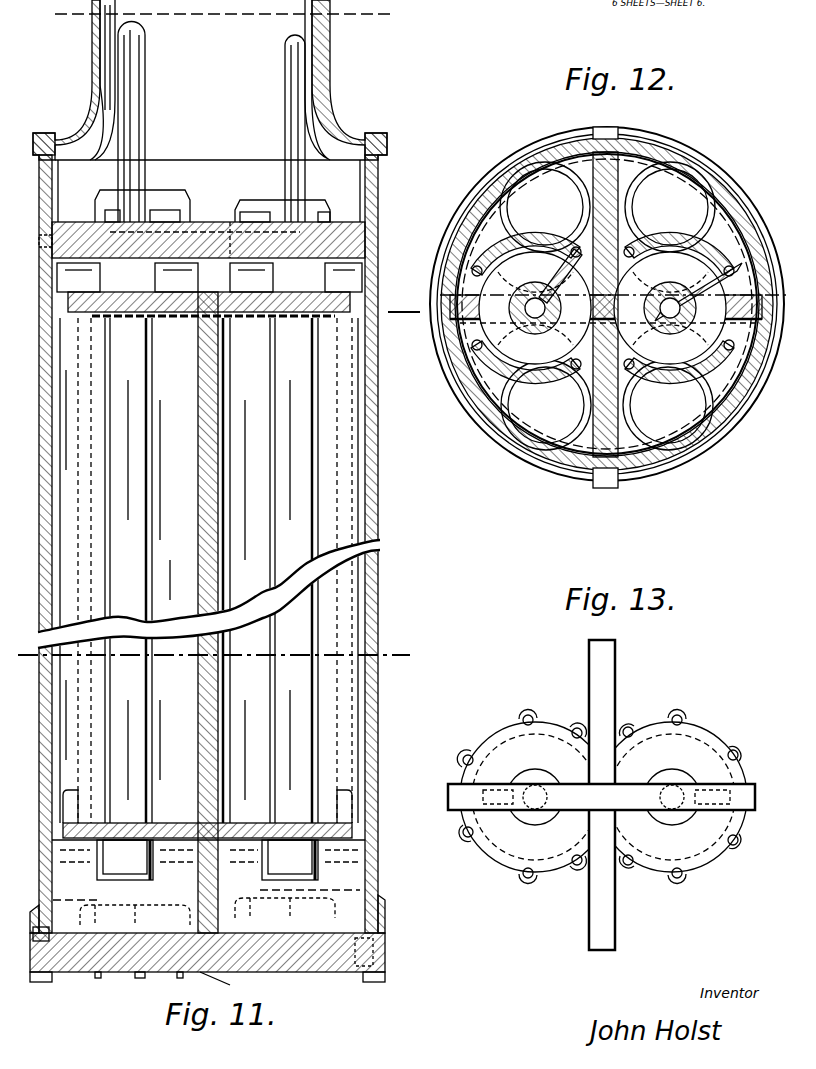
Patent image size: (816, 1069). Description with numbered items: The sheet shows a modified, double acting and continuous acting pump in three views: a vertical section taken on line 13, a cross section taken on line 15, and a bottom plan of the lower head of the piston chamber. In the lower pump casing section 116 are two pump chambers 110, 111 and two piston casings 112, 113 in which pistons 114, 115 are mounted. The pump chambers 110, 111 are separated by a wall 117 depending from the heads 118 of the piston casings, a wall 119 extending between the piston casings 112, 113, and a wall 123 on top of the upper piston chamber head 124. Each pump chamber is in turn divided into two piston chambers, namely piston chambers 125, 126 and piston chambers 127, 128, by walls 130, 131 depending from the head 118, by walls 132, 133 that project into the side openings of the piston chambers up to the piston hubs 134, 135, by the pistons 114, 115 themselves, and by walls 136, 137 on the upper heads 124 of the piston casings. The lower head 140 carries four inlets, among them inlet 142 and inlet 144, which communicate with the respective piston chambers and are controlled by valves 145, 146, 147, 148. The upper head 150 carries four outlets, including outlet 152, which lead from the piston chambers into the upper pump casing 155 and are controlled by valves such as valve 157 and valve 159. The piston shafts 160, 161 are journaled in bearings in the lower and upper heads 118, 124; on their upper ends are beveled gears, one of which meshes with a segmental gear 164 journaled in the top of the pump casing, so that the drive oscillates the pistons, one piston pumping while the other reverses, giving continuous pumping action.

In FIG. 11, the section line 13 is at (404, 320).
In FIG. 12, the section line 13 is at (450, 312).
In FIG. 11, the section line 15 is at (226, 655).
In FIG. 12, the pump chamber 110 is at (757, 212).
In FIG. 11, the pump chamber 111 is at (208, 533).
In FIG. 12, the pump chamber 111 is at (465, 370).
In FIG. 12, the piston casing 112 is at (730, 170).
In FIG. 12, the piston casing 113 is at (470, 415).
In FIG. 12, the piston 114 is at (670, 291).
In FIG. 11, the piston 115 is at (193, 570).
In FIG. 12, the piston 115 is at (543, 290).
In FIG. 11, the lower pump casing section 116 is at (389, 576).
In FIG. 12, the lower pump casing section 116 is at (714, 473).
In FIG. 11, the wall 117 is at (195, 882).
In FIG. 13, the wall 117 is at (605, 905).
In FIG. 11, the head 118 is at (85, 820).
In FIG. 13, the head 118 is at (705, 740).
In FIG. 11, the wall 119 is at (218, 725).
In FIG. 12, the wall 119 is at (635, 148).
In FIG. 11, the wall 123 is at (220, 260).
In FIG. 11, the upper piston chamber head 124 is at (178, 312).
In FIG. 12, the piston chamber 125 is at (725, 373).
In FIG. 12, the piston chamber 126 is at (700, 227).
In FIG. 12, the piston chamber 127 is at (565, 445).
In FIG. 12, the piston chamber 128 is at (570, 172).
In FIG. 11, the wall 130 is at (340, 897).
In FIG. 13, the wall 130 is at (730, 795).
In FIG. 11, the wall 131 is at (58, 972).
In FIG. 13, the wall 131 is at (495, 790).
In FIG. 11, the wall 132 is at (325, 518).
In FIG. 12, the wall 132 is at (720, 250).
In FIG. 11, the wall 133 is at (75, 570).
In FIG. 12, the wall 133 is at (490, 312).
In FIG. 11, the piston hub 134 is at (300, 620).
In FIG. 12, the piston hub 134 is at (735, 375).
In FIG. 11, the piston hub 135 is at (118, 570).
In FIG. 12, the piston hub 135 is at (530, 258).
In FIG. 11, the wall 136 is at (296, 277).
In FIG. 11, the wall 137 is at (127, 277).
In FIG. 11, the lower head 140 is at (348, 972).
In FIG. 11, the inlet 142 is at (372, 957).
In FIG. 11, the inlet 144 is at (235, 983).
In FIG. 12, the valve 145 is at (668, 405).
In FIG. 11, the valve 146 is at (330, 912).
In FIG. 12, the valve 146 is at (670, 207).
In FIG. 11, the valve 147 is at (72, 915).
In FIG. 12, the valve 147 is at (546, 405).
In FIG. 12, the valve 148 is at (545, 207).
In FIG. 11, the upper head 150 is at (345, 245).
In FIG. 11, the outlet 152 is at (372, 212).
In FIG. 11, the upper pump casing 155 is at (215, 87).
In FIG. 11, the valve 157 is at (320, 207).
In FIG. 11, the valve 159 is at (96, 188).
In FIG. 11, the piston shaft 160 is at (300, 62).
In FIG. 12, the piston shaft 160 is at (670, 335).
In FIG. 11, the piston shaft 161 is at (125, 48).
In FIG. 12, the piston shaft 161 is at (535, 335).
In FIG. 11, the segmental gear 164 is at (39, 240).